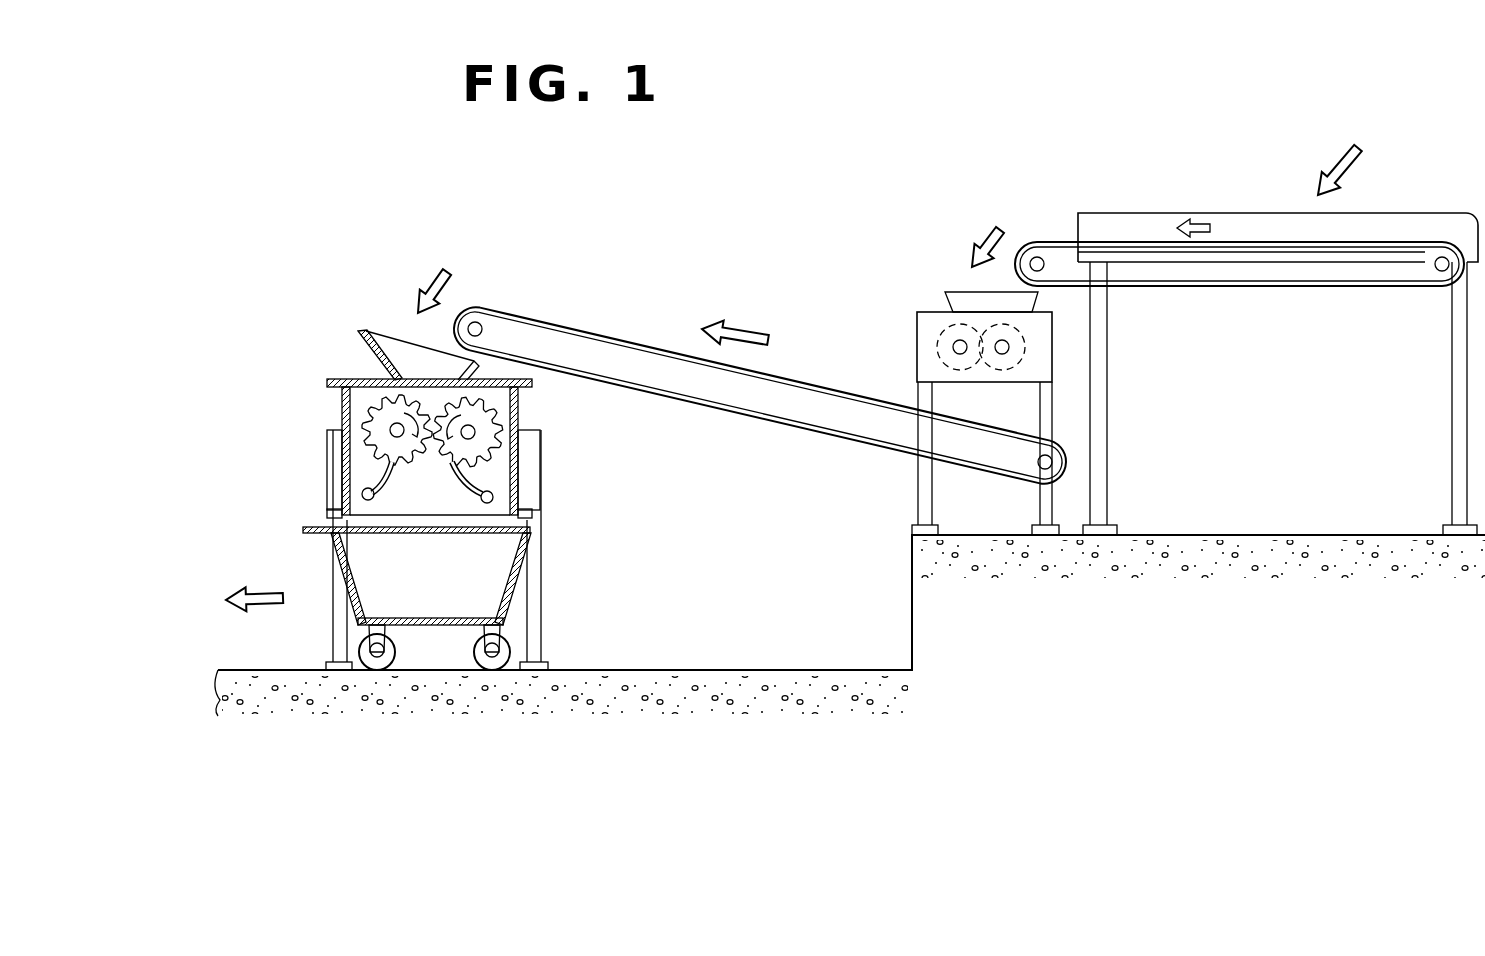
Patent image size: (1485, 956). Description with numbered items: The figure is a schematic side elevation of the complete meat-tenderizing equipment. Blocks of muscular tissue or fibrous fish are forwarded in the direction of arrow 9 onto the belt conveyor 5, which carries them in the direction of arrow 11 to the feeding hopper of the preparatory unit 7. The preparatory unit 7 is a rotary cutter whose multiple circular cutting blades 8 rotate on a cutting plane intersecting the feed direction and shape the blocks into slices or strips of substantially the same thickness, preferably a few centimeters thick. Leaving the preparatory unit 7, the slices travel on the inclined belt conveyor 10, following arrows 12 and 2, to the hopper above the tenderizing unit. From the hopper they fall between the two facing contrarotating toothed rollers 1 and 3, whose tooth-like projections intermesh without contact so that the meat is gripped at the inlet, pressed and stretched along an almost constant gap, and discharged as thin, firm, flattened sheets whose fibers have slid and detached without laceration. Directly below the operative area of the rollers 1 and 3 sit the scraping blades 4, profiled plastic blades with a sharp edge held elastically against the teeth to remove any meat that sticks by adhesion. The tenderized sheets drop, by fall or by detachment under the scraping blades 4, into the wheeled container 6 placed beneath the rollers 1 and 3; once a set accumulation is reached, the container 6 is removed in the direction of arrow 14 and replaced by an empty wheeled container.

The tenderizing roller 1 is at (362, 412).
The arrow 2 is at (432, 282).
The tenderizing roller 3 is at (455, 416).
The scraping blades 4 is at (492, 499).
The belt conveyor 5 is at (1052, 245).
The wheeled container 6 is at (346, 540).
The preparatory unit 7 is at (920, 355).
The blades 8 is at (933, 318).
The arrow 9 is at (1333, 160).
The belt conveyor 10 is at (555, 318).
The arrow 11 is at (985, 228).
The arrow 12 is at (747, 338).
The arrow 14 is at (245, 612).